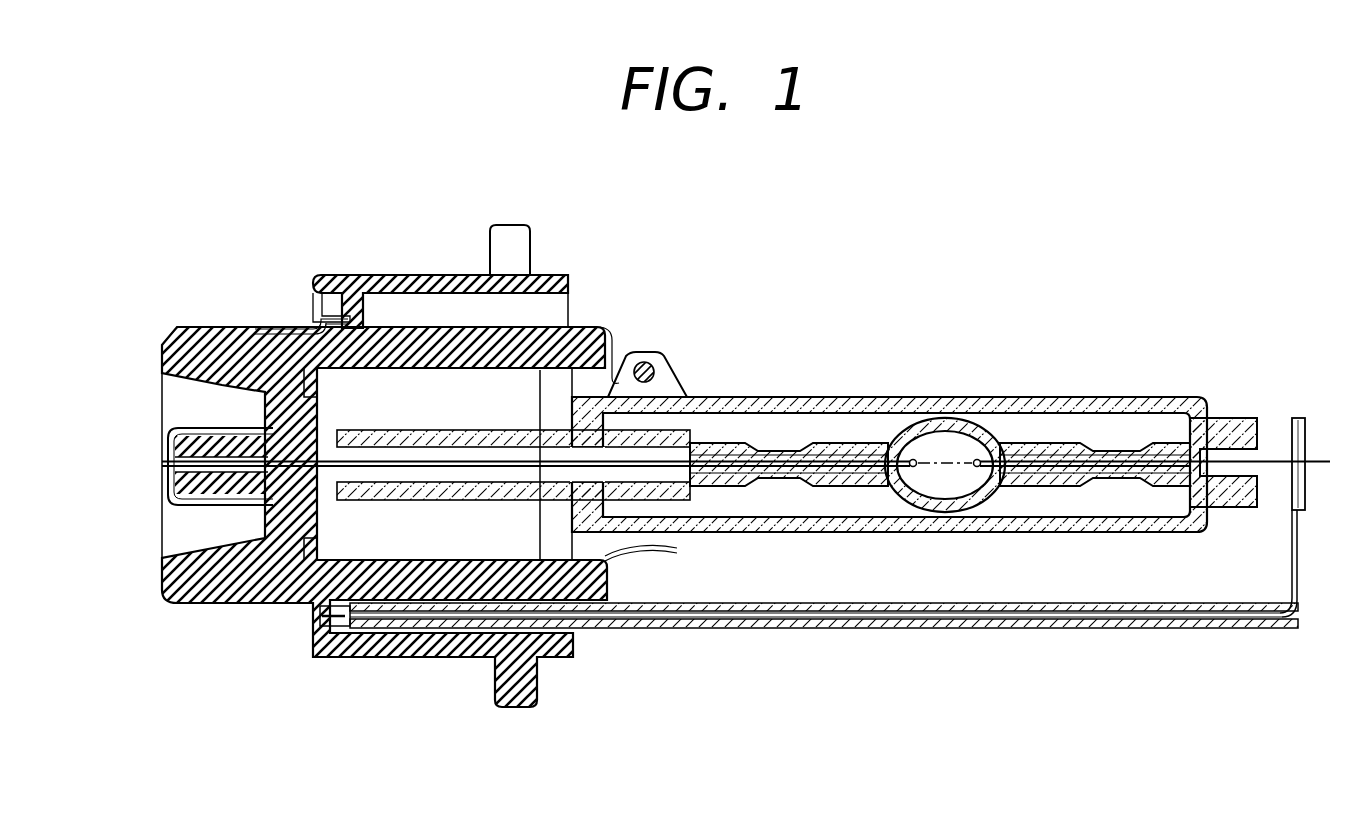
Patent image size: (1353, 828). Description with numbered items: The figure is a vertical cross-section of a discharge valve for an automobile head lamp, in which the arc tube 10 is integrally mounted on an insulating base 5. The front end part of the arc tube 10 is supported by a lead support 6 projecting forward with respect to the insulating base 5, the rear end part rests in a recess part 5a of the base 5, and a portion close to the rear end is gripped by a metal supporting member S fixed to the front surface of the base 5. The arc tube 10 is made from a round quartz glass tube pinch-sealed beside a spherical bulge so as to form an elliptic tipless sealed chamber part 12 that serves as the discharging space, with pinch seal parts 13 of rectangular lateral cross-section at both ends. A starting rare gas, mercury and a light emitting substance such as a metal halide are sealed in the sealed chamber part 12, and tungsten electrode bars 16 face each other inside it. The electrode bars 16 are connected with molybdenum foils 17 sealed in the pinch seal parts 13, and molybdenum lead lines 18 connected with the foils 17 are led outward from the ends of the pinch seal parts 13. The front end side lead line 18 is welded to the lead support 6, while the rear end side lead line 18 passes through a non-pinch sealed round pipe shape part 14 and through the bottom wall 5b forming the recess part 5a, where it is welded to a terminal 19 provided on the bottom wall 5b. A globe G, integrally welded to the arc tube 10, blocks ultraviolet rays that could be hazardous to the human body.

The insulating base 5 is at (394, 258).
The recess part 5a is at (448, 385).
The bottom wall 5b is at (262, 400).
The lead support 6 is at (1303, 557).
The arc tube 10 is at (746, 479).
The sealed chamber part 12 is at (890, 408).
The pinch seal part 13 is at (738, 400).
The round pipe shape part 14 is at (398, 432).
The electrode bar 16 is at (913, 468).
The molybdenum foil 17 is at (770, 468).
The lead line 18 is at (325, 292).
The terminal 19 is at (176, 428).
The globe G is at (800, 398).
The metal supporting member S is at (630, 336).